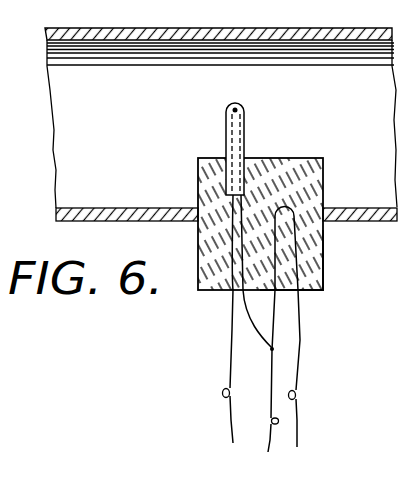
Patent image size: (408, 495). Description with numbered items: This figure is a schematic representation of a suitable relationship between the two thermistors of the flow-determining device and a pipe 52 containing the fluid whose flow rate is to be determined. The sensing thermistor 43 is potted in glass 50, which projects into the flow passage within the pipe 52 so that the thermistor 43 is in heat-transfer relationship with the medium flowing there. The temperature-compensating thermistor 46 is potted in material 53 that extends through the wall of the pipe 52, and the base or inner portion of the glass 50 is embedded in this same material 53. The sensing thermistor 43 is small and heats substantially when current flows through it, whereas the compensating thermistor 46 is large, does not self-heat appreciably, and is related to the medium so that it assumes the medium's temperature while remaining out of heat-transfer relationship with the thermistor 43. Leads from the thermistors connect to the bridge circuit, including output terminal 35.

The output terminal 35 is at (270, 349).
The sensing thermistor 43 is at (240, 106).
The temperature-compensating thermistor 46 is at (298, 182).
The glass 50 is at (245, 125).
The pipe 52 is at (128, 31).
The potting material 53 is at (320, 266).